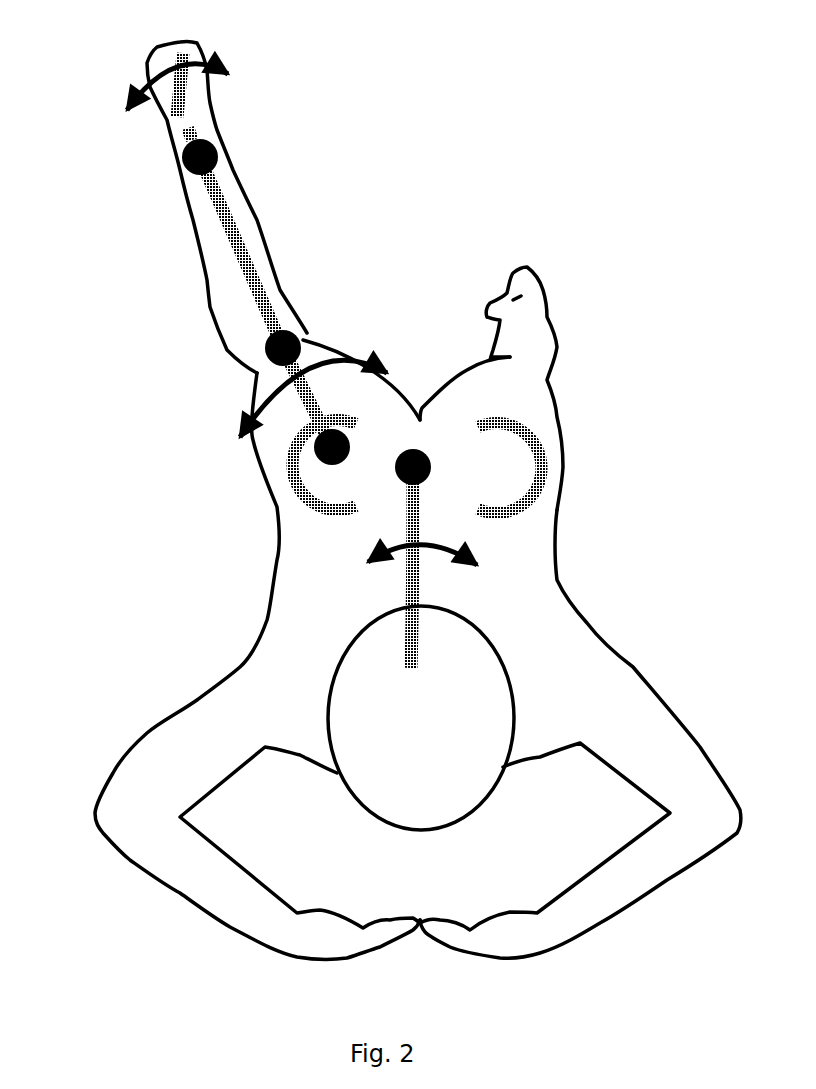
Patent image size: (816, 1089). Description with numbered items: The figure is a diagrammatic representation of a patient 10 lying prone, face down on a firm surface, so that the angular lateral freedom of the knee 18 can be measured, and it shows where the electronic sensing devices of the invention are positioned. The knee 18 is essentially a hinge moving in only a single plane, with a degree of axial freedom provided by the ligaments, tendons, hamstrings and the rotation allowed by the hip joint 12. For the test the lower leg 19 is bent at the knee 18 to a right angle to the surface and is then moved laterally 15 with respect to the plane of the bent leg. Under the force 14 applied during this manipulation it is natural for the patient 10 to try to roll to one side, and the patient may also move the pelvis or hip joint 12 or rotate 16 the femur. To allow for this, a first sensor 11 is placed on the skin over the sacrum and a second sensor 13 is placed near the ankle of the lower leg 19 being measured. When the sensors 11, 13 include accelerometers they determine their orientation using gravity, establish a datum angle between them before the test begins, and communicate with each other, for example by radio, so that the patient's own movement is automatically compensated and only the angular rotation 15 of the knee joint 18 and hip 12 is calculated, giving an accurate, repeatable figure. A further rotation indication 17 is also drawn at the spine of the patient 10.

The patient 10 is at (637, 630).
The first sensor 11 is at (438, 460).
The hip joint 12 is at (318, 458).
The second sensor 13 is at (177, 167).
The force 14 is at (288, 182).
The lateral movement 15 is at (205, 67).
The femur rotation 16 is at (291, 421).
The spine rotation 17 is at (447, 577).
The knee 18 is at (308, 344).
The lower leg 19 is at (252, 302).